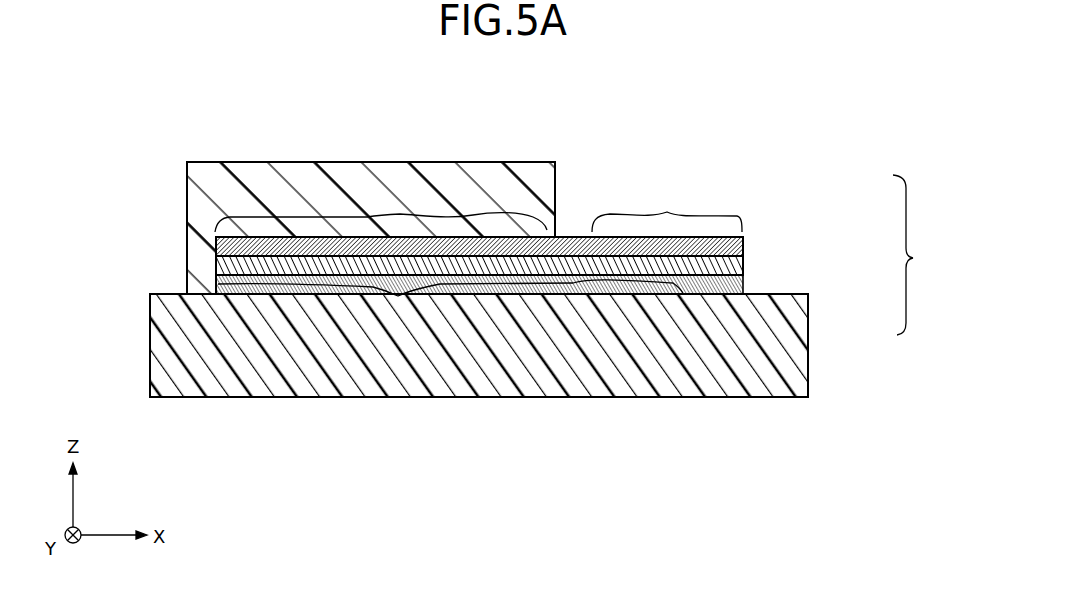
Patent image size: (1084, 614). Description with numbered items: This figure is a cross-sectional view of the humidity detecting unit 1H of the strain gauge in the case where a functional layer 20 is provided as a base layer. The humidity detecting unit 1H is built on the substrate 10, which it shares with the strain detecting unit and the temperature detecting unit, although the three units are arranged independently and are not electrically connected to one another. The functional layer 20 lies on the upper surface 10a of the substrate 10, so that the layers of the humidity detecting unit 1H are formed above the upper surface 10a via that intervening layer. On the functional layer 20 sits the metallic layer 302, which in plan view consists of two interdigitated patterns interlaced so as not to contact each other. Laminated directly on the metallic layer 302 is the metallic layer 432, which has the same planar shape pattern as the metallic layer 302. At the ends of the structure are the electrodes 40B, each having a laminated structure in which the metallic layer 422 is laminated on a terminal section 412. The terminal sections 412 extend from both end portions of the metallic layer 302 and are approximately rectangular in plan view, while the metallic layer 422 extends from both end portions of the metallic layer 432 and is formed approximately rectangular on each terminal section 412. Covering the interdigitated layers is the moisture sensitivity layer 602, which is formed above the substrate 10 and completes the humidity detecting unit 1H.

The humidity detecting unit 1H is at (79, 155).
The substrate 10 is at (168, 345).
The upper surface of the substrate 10a is at (193, 294).
The functional layer 20 is at (216, 283).
The metallic layer 302 is at (398, 296).
The electrodes 40B is at (927, 255).
The terminal section 412 is at (742, 284).
The metallic layer 422 is at (667, 212).
The metallic layer 432 is at (380, 213).
The moisture sensitivity layer 602 is at (460, 162).